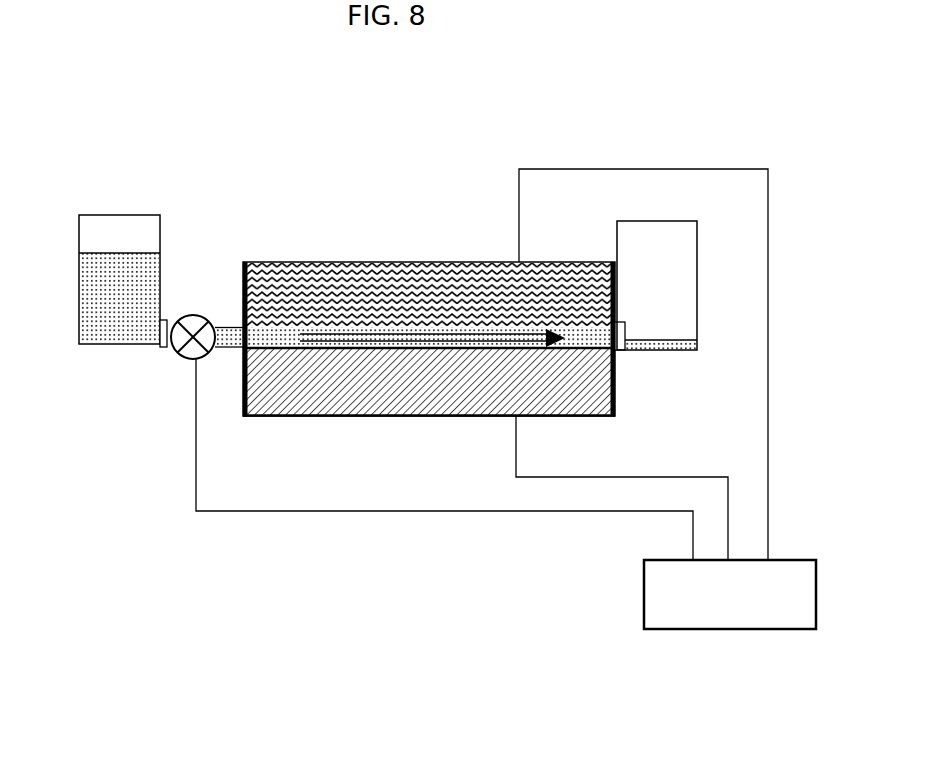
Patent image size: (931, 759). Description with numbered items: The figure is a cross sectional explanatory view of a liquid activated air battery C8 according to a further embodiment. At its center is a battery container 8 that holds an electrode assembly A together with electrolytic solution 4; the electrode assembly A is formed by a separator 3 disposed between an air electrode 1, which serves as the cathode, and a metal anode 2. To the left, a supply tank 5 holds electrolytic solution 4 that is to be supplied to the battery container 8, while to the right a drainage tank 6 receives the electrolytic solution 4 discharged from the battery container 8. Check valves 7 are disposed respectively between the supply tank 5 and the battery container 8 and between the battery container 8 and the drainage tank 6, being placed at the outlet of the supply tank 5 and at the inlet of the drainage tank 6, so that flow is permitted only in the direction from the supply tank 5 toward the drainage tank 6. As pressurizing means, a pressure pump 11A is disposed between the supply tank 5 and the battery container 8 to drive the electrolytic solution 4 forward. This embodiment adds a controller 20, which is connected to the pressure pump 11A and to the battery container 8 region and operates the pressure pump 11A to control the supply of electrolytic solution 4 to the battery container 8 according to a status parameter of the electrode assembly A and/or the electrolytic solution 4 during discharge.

The air electrode 1 is at (302, 268).
The metal anode 2 is at (316, 403).
The separator 3 is at (432, 355).
The electrolytic solution 4 is at (110, 330).
The supply tank 5 is at (98, 219).
The drainage tank 6 is at (668, 238).
The check valve 7 is at (160, 343).
The battery container 8 is at (240, 287).
The pressure pump 11A is at (213, 358).
The controller 20 is at (668, 618).
The electrode assembly A is at (368, 255).
The liquid activated air battery C8 is at (484, 205).